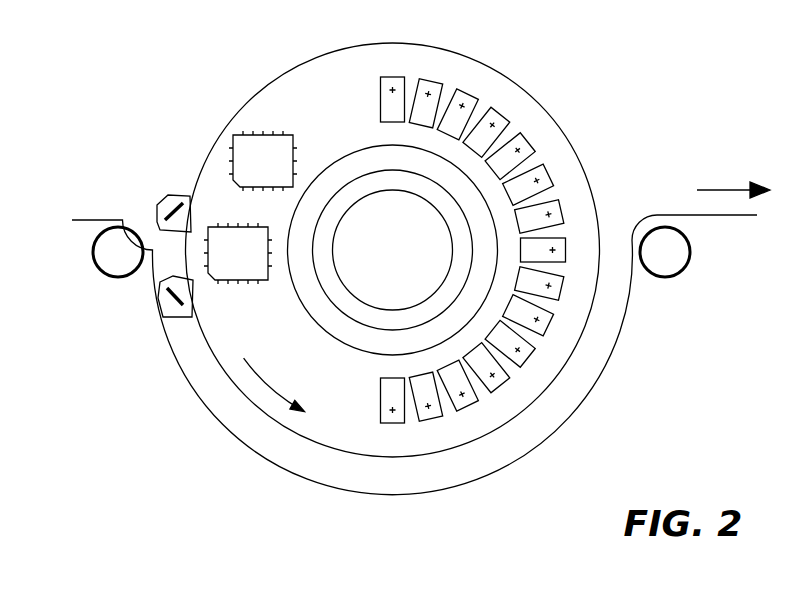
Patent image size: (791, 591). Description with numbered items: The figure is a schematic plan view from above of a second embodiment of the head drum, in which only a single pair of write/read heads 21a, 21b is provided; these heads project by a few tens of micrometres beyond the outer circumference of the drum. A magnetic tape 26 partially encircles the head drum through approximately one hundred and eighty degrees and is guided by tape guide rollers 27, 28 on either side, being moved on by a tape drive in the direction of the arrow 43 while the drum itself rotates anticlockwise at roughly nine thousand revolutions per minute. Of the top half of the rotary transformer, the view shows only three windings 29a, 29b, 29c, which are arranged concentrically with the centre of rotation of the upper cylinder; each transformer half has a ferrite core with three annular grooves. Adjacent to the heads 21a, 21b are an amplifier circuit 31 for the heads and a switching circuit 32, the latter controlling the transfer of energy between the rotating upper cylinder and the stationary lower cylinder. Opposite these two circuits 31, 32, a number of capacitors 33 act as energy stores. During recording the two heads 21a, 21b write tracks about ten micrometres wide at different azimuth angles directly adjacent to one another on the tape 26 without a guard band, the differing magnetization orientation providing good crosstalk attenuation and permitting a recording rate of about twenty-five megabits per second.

The write/read head 21a is at (165, 320).
The write/read head 21b is at (167, 196).
The magnetic tape 26 is at (618, 332).
The tape guide roller 27 is at (107, 277).
The take-up roller 28 is at (678, 273).
The winding 29a is at (333, 337).
The winding 29b is at (325, 292).
The winding 29c is at (333, 258).
The amplifier circuit 31 is at (222, 283).
The switching circuit 32 is at (277, 135).
The capacitors 33 is at (395, 77).
The arrow 43 is at (713, 190).